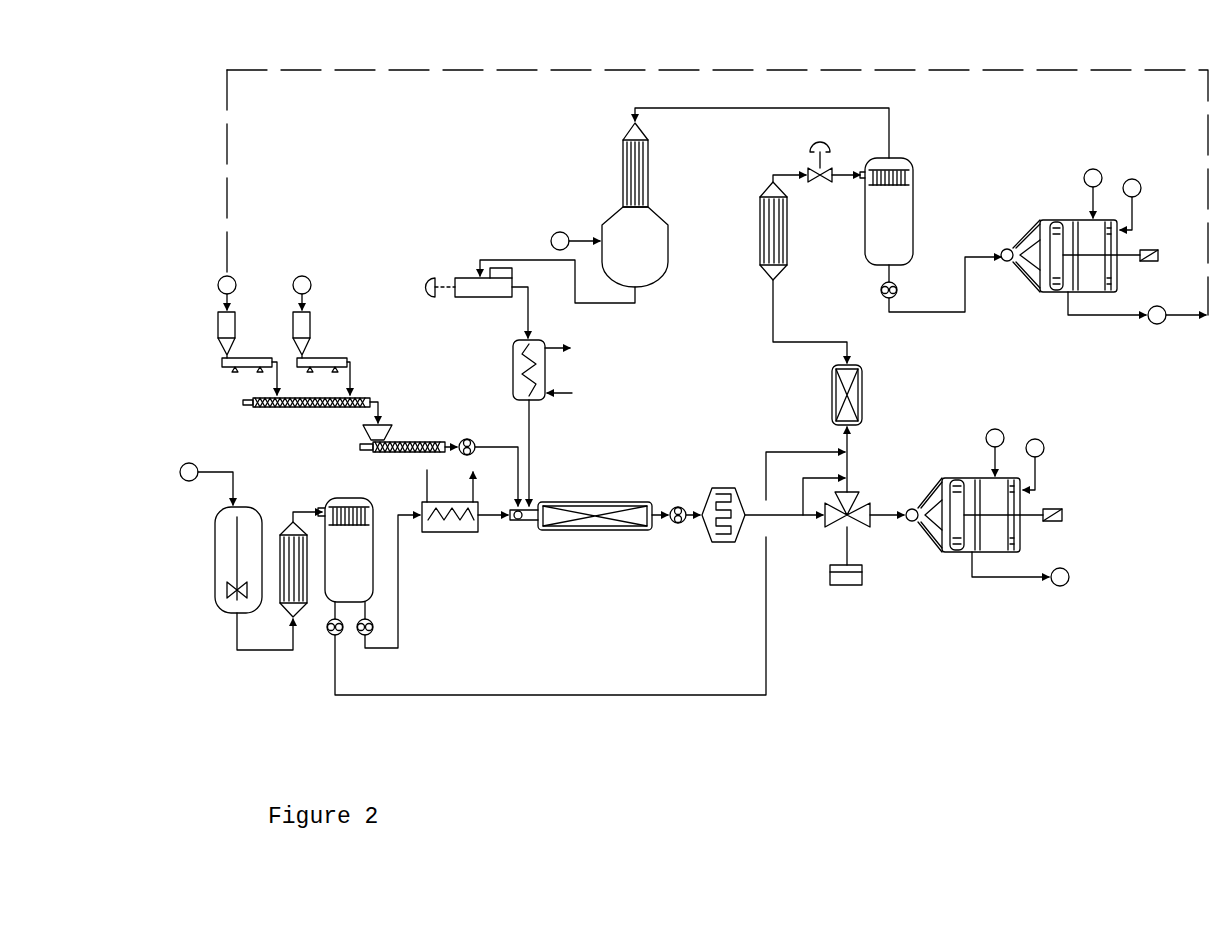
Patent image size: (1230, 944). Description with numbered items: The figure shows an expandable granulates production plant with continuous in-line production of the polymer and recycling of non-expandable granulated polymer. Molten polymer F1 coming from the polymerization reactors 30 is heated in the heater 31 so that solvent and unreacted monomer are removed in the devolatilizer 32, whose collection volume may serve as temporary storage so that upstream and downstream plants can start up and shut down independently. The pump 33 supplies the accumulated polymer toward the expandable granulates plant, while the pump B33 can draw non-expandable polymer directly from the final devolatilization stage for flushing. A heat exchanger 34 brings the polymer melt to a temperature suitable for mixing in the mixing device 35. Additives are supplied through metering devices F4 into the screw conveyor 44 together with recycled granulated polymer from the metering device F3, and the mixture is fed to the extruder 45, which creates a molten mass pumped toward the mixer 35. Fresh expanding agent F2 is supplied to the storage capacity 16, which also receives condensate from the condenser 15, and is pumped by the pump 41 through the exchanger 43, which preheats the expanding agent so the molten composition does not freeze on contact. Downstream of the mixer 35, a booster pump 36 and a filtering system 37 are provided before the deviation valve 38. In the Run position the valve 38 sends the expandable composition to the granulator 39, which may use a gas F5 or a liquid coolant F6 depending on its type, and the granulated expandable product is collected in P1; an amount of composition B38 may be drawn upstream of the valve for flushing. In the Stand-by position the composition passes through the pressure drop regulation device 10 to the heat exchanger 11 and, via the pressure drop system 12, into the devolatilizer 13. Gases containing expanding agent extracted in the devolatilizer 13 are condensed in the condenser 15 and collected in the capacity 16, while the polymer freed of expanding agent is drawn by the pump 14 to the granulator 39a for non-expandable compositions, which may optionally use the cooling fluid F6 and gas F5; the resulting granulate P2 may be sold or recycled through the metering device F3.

The pressure drop regulation device 10 is at (830, 387).
The heat exchanger 11 is at (768, 175).
The pressure drop system 12 is at (820, 190).
The devolatilizer 13 is at (883, 160).
The pump 14 is at (884, 299).
The condenser 15 is at (621, 120).
The storage capacity 16 is at (600, 215).
The polymerization reactors 30 is at (213, 605).
The heater 31 is at (287, 510).
The devolatilizer 32 is at (340, 493).
The pump 33 is at (360, 637).
The pump B33 is at (328, 637).
The heat exchanger 34 is at (437, 535).
The mixing device 35 is at (588, 535).
The booster pump 36 is at (672, 530).
The filtering system 37 is at (727, 548).
The deviation valve 38 is at (845, 598).
The expandable composition draw B38 is at (821, 488).
The granulator 39 is at (935, 560).
The granulator for non-expandable compositions 39a is at (1033, 298).
The pump 41 is at (486, 300).
The exchanger 43 is at (510, 365).
The screw conveyor 44 is at (358, 390).
The extruder 45 is at (412, 443).
The molten polymer F1 is at (181, 477).
The fresh expanding agent F2 is at (554, 233).
The metering device for granules F3 is at (236, 281).
The metering devices F4 is at (311, 281).
The gas supply F5 is at (992, 430).
The liquid coolant supply F6 is at (1044, 445).
The granulated expandable product P1 is at (1068, 568).
The granulate P2 is at (1163, 306).